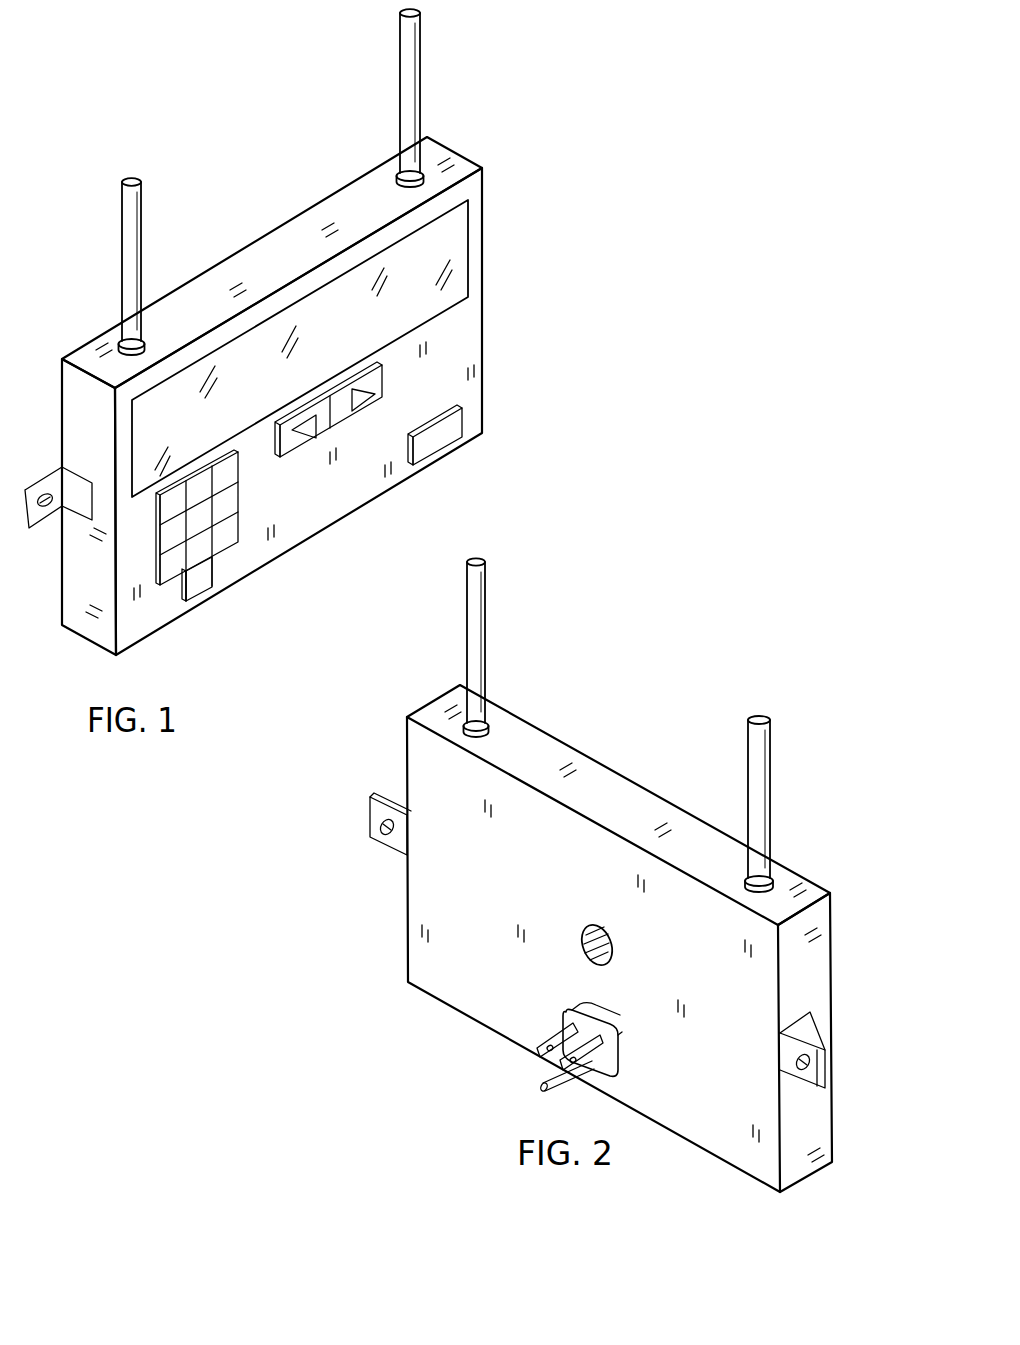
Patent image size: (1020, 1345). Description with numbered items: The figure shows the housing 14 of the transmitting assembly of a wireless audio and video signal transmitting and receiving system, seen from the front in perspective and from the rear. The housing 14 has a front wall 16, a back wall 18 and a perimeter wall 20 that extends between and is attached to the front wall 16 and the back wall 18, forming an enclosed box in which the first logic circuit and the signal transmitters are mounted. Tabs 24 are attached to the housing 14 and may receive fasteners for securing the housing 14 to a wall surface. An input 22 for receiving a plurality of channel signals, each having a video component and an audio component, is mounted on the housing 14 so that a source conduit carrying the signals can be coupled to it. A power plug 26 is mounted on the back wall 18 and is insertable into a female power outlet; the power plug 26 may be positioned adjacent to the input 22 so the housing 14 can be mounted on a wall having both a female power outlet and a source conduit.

In FIG. 1, the housing 14 is at (428, 137).
In FIG. 1, the front wall 16 is at (465, 333).
In FIG. 2, the back wall 18 is at (415, 937).
In FIG. 2, the perimeter wall 20 is at (542, 748).
In FIG. 2, the input 22 is at (585, 945).
In FIG. 2, the tabs 24 is at (372, 813).
In FIG. 2, the power plug 26 is at (537, 1057).